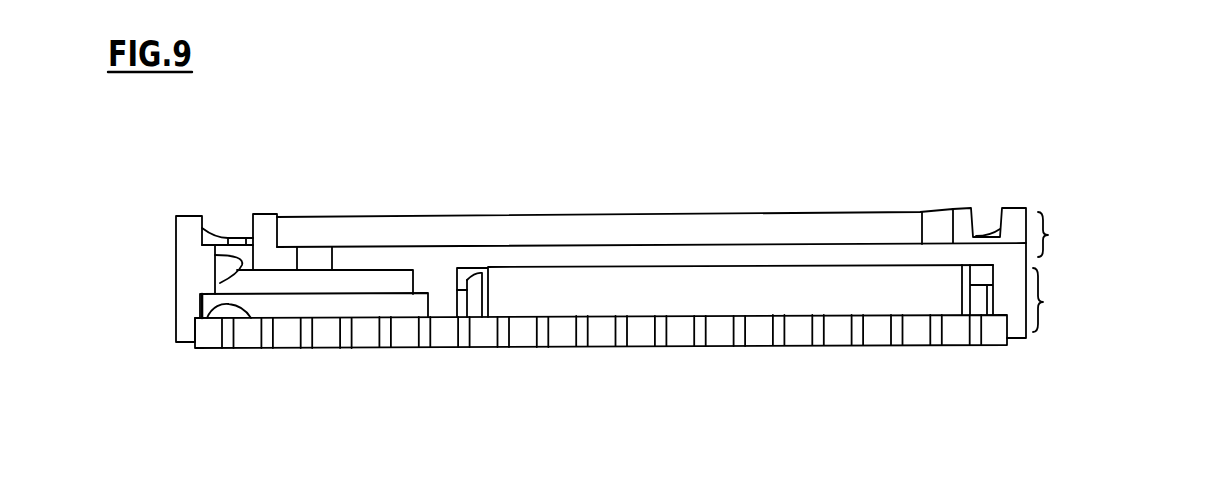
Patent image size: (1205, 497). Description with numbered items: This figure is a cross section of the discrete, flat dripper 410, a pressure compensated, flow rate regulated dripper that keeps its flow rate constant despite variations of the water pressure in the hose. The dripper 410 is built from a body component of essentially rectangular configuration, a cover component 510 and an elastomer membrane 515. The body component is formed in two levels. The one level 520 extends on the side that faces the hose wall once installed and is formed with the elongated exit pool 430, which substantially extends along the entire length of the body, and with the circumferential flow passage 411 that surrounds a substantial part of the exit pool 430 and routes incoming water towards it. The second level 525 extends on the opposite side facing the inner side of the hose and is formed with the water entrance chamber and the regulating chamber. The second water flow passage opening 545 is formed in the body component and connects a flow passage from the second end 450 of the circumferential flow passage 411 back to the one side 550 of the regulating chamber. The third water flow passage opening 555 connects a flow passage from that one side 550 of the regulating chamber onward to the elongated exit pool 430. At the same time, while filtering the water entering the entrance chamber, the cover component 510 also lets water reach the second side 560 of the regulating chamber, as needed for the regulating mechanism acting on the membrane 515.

The discrete, flat dripper 410 is at (873, 375).
The flow passage 411 is at (988, 217).
The exit pool 430 is at (718, 237).
The second end 450 is at (240, 237).
The cover component 510 is at (485, 340).
The elastomer membrane 515 is at (300, 305).
The one level 520 is at (1050, 238).
The second level 525 is at (1042, 320).
The second water flow passage opening 545 is at (248, 248).
The one side of regulating chamber 550 is at (213, 248).
The third water flow passage opening 555 is at (315, 260).
The second side of regulating chamber 560 is at (203, 320).